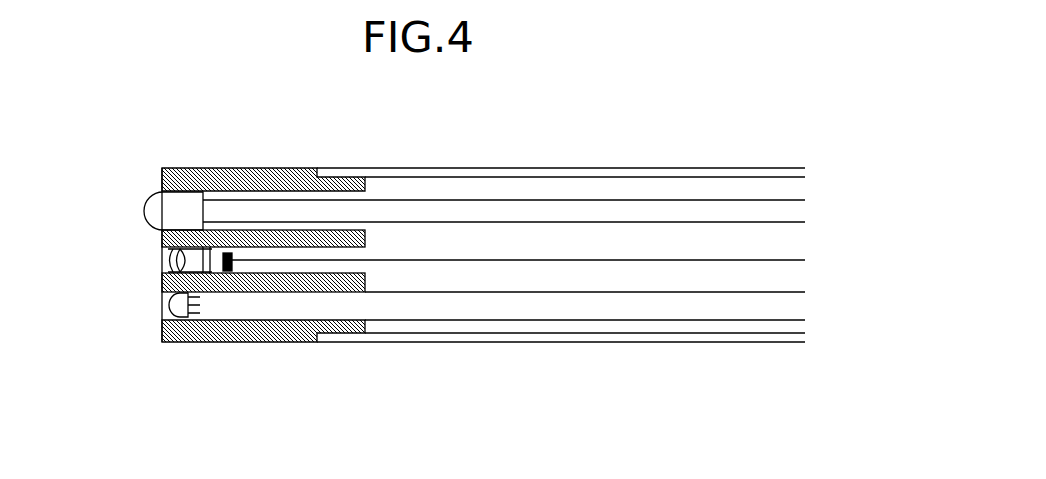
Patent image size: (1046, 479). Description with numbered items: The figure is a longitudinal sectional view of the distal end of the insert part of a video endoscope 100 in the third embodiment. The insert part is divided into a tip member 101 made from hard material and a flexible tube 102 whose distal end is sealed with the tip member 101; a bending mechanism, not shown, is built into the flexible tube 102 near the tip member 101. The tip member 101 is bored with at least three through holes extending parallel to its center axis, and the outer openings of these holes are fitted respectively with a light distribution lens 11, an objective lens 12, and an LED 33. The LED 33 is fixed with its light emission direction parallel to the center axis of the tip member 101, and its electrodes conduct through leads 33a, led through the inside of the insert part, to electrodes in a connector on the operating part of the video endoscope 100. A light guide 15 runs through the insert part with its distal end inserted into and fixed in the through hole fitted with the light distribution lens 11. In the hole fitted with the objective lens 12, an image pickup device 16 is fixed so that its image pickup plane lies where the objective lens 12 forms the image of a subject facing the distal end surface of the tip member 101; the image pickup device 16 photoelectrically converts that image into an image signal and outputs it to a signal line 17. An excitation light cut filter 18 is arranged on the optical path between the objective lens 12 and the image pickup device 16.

The video endoscope 100 is at (552, 360).
The tip member 101 is at (192, 168).
The flexible tube 102 is at (633, 167).
The LED 33 is at (205, 193).
The leads 33a is at (525, 200).
The objective lens 12 is at (162, 258).
The excitation light cut filter 18 is at (212, 270).
The image pickup device 16 is at (227, 268).
The signal line 17 is at (720, 260).
The light distribution lens 11 is at (162, 302).
The light guide 15 is at (638, 320).